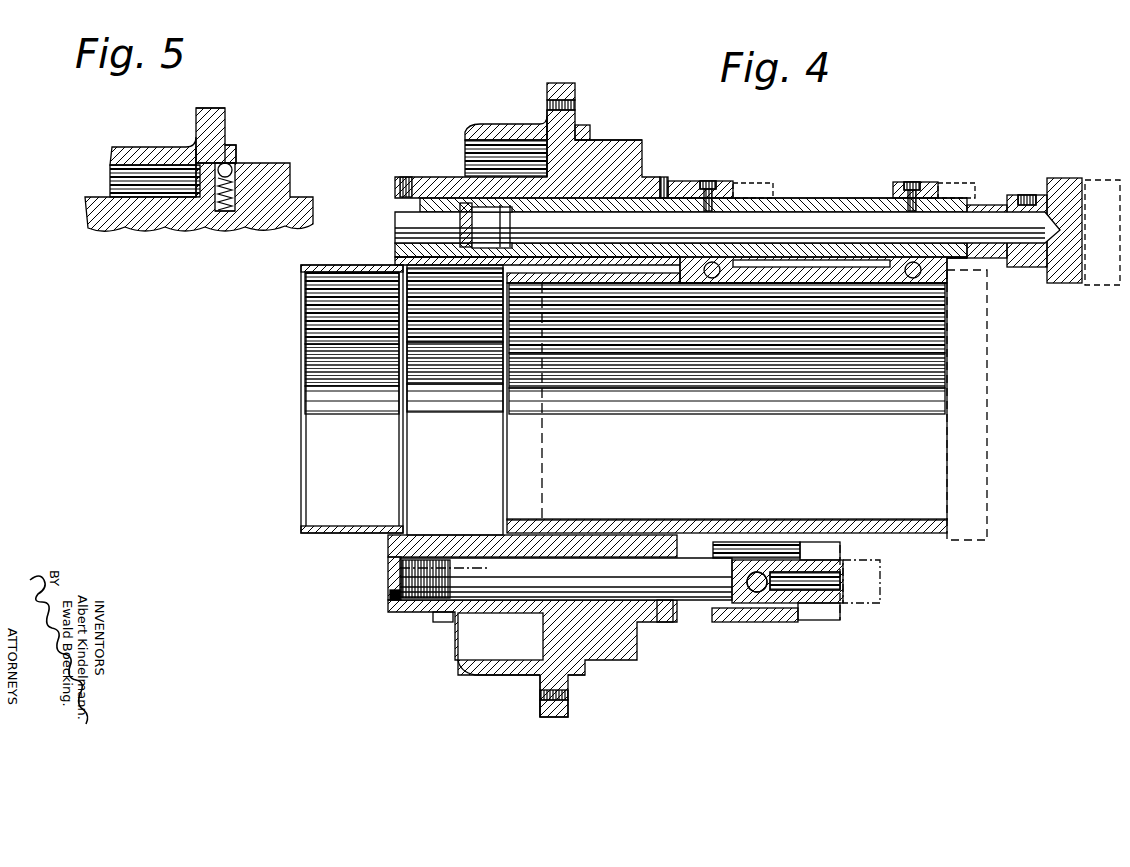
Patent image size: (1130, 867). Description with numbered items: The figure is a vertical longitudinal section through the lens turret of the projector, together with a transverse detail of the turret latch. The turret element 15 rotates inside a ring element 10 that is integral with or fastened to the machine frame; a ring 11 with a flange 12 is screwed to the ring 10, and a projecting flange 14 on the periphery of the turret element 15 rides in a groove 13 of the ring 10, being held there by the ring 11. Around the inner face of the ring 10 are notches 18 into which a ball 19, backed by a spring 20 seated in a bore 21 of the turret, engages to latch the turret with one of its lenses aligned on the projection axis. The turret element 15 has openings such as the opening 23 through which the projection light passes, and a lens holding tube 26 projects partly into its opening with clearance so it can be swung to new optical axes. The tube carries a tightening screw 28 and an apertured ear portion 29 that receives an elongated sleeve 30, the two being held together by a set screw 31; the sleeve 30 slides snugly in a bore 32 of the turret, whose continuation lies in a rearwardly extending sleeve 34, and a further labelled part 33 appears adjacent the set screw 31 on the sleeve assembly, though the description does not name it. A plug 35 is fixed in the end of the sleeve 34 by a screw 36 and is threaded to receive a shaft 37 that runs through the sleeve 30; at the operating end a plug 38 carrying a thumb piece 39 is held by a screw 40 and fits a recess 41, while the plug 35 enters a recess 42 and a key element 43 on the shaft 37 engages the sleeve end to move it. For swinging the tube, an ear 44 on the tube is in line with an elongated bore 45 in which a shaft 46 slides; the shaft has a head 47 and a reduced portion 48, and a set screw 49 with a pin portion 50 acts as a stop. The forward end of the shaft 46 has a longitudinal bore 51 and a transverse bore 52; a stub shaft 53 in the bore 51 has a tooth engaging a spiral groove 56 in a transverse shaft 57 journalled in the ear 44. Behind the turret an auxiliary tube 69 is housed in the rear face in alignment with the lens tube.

In FIG. 5, the ring element 10 is at (147, 147).
In FIG. 4, the ring element 10 is at (500, 124).
In FIG. 5, the ring 11 is at (224, 112).
In FIG. 4, the ring 11 is at (576, 90).
In FIG. 5, the flange 12 is at (262, 150).
In FIG. 4, the flange 12 is at (600, 140).
In FIG. 5, the groove 13 is at (198, 135).
In FIG. 4, the groove 13 is at (547, 120).
In FIG. 4, the projecting flange 14 is at (590, 128).
In FIG. 5, the turret element 15 is at (100, 202).
In FIG. 4, the turret element 15 is at (394, 183).
In FIG. 5, the notches or indentations 18 is at (233, 155).
In FIG. 5, the ball 19 is at (232, 166).
In FIG. 5, the spring 20 is at (214, 212).
In FIG. 5, the bore 21 is at (232, 212).
In FIG. 4, the opening 23 is at (697, 402).
In FIG. 4, the lens holding tube 26 is at (795, 542).
In FIG. 4, the tightening screw 28 is at (950, 280).
In FIG. 4, the apertured ear portion 29 is at (750, 183).
In FIG. 4, the elongated sleeve 30 is at (832, 198).
In FIG. 4, the set screw 31 is at (712, 181).
In FIG. 4, the bore 32 is at (664, 177).
In FIG. 4, the clamp block 33 is at (672, 181).
In FIG. 4, the rearwardly extending sleeve 34 is at (430, 198).
In FIG. 4, the plug 35 is at (397, 210).
In FIG. 4, the screw 36 is at (404, 177).
In FIG. 4, the shaft 37 is at (395, 226).
In FIG. 4, the plug 38 is at (985, 205).
In FIG. 4, the operating thumb piece 39 is at (1065, 178).
In FIG. 4, the screw 40 is at (1028, 195).
In FIG. 4, the recess 41 is at (1000, 205).
In FIG. 4, the recess 42 is at (463, 205).
In FIG. 4, the key element 43 is at (504, 206).
In FIG. 4, the ear 44 is at (780, 622).
In FIG. 4, the bore 45 is at (636, 623).
In FIG. 4, the shaft 46 is at (500, 556).
In FIG. 4, the head 47 is at (388, 575).
In FIG. 4, the reduced portion 48 is at (420, 560).
In FIG. 4, the set screw 49 is at (440, 620).
In FIG. 4, the pin portion 50 is at (390, 596).
In FIG. 4, the longitudinal bore 51 is at (822, 570).
In FIG. 4, the transverse bore 52 is at (745, 560).
In FIG. 4, the stub shaft 53 is at (845, 580).
In FIG. 4, the spiral groove 56 is at (800, 620).
In FIG. 4, the transverse shaft 57 is at (755, 592).
In FIG. 4, the auxiliary tube 69 is at (308, 448).